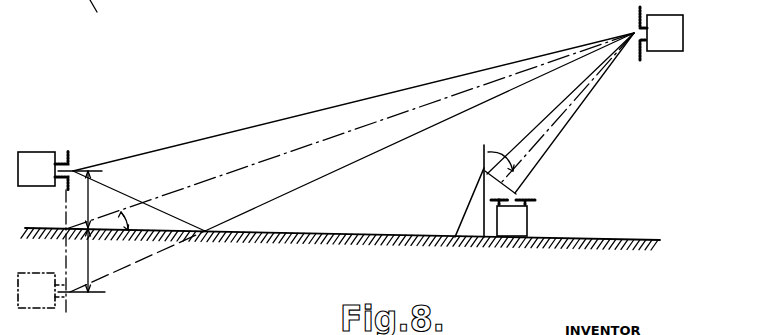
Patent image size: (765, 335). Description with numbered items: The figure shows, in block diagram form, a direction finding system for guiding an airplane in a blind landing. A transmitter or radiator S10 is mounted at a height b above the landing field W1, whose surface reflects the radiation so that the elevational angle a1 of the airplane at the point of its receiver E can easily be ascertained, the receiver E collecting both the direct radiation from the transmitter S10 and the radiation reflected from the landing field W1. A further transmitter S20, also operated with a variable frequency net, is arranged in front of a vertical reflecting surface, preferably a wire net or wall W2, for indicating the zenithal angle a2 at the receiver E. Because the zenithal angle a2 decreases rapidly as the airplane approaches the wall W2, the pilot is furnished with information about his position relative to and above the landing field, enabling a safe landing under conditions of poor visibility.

The transmitter or radiator S10 is at (36, 156).
The receiver E is at (661, 22).
The reflecting ground wall W1 is at (330, 234).
The vertical reflecting surface (wire net or wall) W2 is at (484, 171).
The further transmitter S20 is at (527, 219).
The elevational angle a1 is at (135, 221).
The zenithal angle a2 is at (501, 152).
The half spacing b/2 b is at (77, 231).